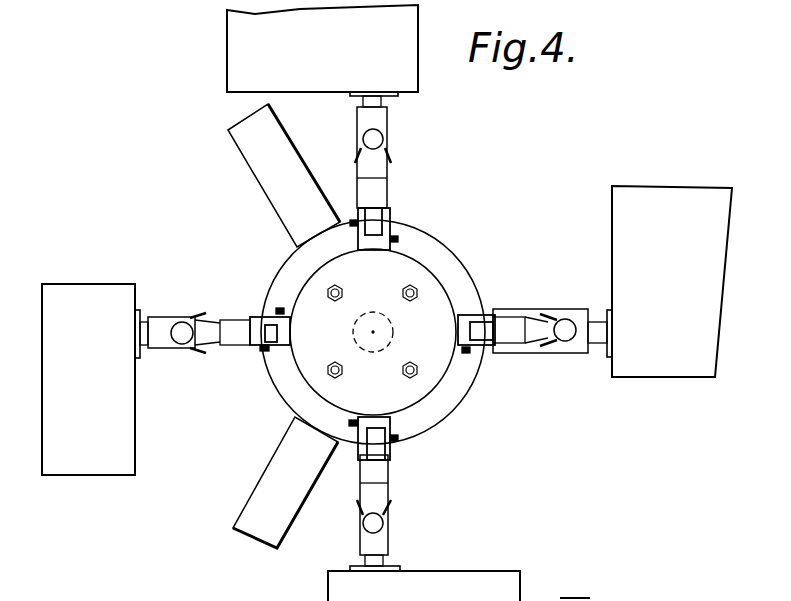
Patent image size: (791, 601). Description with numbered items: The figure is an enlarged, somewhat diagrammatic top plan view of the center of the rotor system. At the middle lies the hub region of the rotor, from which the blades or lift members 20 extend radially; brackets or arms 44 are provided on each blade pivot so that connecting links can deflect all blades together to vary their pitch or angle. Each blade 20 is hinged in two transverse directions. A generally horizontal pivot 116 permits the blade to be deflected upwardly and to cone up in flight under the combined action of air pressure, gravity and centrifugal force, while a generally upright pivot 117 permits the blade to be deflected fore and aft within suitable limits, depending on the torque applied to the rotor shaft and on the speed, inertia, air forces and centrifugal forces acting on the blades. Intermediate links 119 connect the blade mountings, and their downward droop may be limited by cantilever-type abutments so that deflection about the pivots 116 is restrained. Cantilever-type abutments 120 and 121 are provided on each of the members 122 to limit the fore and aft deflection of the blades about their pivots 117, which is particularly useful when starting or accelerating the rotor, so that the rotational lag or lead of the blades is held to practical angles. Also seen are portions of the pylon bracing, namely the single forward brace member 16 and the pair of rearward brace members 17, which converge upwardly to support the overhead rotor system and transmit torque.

The forward brace member 16 is at (497, 313).
The rearward brace members 17 is at (268, 168).
The blades 20 is at (660, 281).
The brackets or arms 44 is at (472, 348).
The horizontal pivots 116 is at (482, 312).
The upright pivots 117 is at (385, 137).
The intermediate links 119 is at (230, 332).
The cantilever-type abutment 120 is at (193, 350).
The cantilever-type abutment 121 is at (193, 317).
The members 122 is at (583, 330).